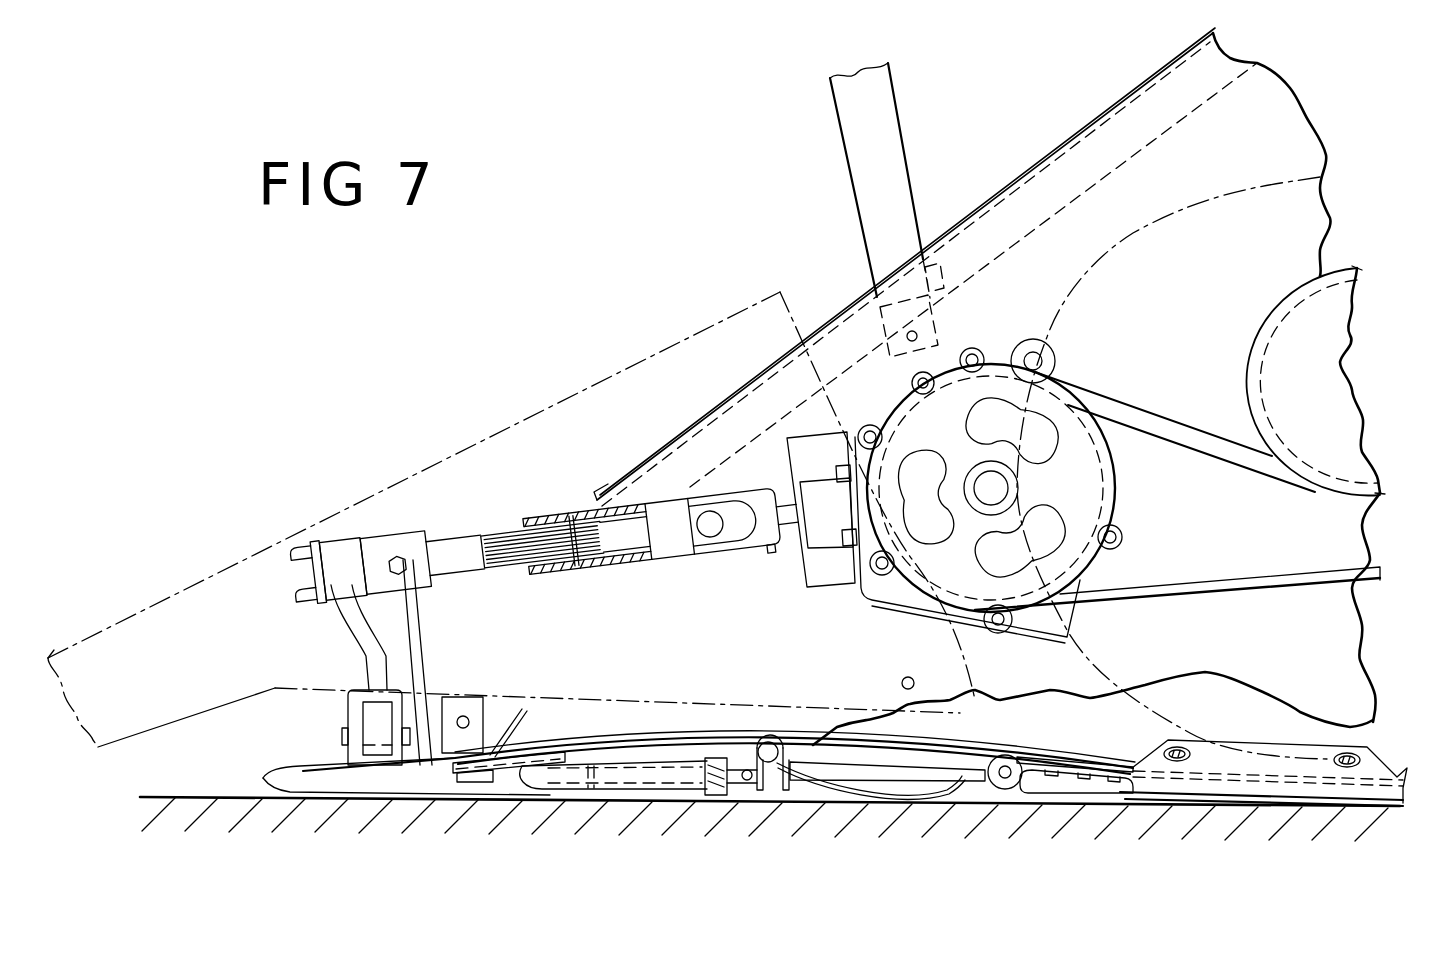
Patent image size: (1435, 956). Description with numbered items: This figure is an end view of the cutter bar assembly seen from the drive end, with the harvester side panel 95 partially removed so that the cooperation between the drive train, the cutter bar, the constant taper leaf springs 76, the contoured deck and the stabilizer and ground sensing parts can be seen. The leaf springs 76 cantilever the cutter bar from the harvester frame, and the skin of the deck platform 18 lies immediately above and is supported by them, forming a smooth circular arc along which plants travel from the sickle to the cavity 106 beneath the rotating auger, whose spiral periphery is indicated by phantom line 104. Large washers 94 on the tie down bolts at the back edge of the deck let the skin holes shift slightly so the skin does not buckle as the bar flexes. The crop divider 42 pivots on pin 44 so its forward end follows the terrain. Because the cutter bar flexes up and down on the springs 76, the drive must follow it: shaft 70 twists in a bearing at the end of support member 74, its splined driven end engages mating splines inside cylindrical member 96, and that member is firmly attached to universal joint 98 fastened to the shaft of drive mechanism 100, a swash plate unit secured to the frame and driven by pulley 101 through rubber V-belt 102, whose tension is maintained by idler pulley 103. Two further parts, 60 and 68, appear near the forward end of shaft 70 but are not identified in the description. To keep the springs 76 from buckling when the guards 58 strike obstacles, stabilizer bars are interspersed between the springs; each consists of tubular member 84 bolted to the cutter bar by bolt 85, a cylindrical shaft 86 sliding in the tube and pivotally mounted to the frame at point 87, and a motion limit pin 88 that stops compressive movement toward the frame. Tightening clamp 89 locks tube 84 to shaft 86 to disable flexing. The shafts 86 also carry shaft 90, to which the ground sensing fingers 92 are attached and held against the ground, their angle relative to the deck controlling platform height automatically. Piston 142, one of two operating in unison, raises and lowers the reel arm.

The deck platform 18 is at (587, 742).
The crop divider 42 is at (568, 398).
The pin 44 is at (902, 682).
The guards 58 is at (288, 771).
The clamp bracket 60 is at (397, 775).
The hanger strap 68 is at (348, 640).
The shaft 70 is at (493, 530).
The support member 74 is at (429, 639).
The constant taper leaf springs 76 is at (685, 740).
The tubular member 84 is at (632, 793).
The bolt 85 is at (474, 772).
The cylindrical shaft 86 is at (980, 790).
The pivot point 87 is at (1010, 766).
The motion limit pin 88 is at (748, 787).
The clamp 89 is at (711, 800).
The shaft 90 is at (770, 745).
The sensing fingers 92 is at (920, 805).
The large washers 94 is at (1097, 757).
The harvester side panel 95 is at (1090, 128).
The cylindrical member 96 is at (587, 567).
The universal joint 98 is at (740, 550).
The drive mechanism 100 is at (845, 583).
The pulley 101 is at (1115, 468).
The V-belt 102 is at (1143, 410).
The idler pulley 103 is at (1287, 288).
The phantom line 104 is at (1088, 279).
The cavity 106 is at (1270, 757).
The piston 142 is at (848, 164).